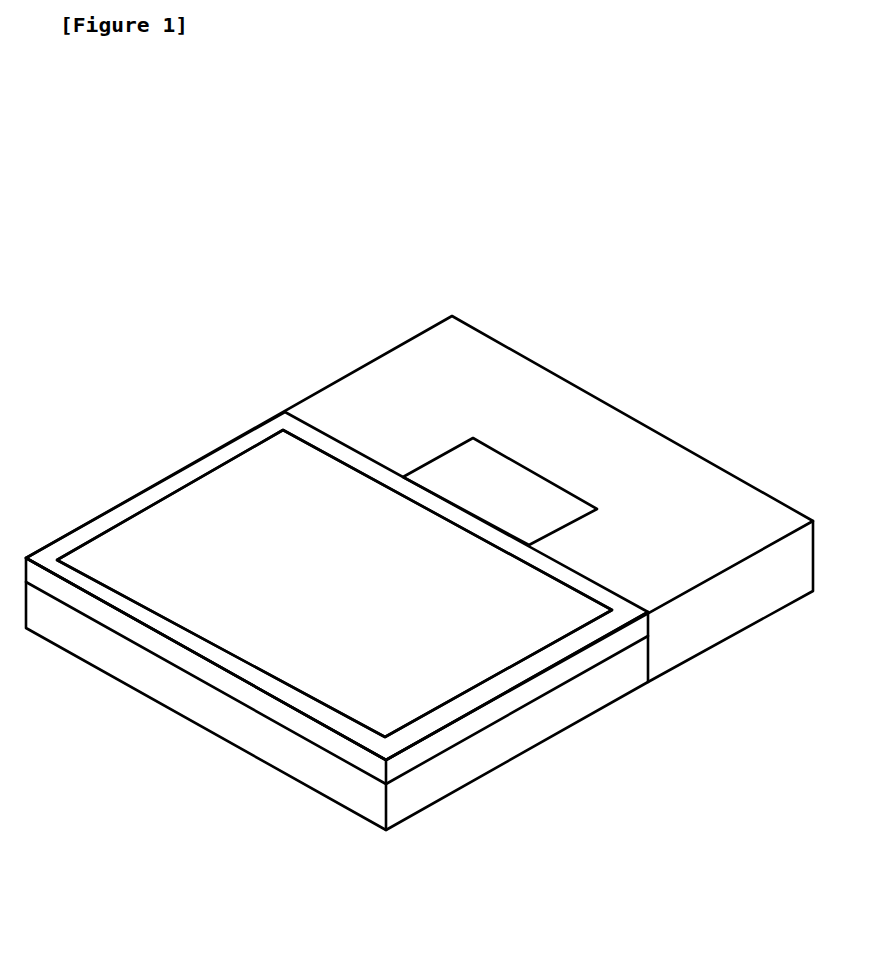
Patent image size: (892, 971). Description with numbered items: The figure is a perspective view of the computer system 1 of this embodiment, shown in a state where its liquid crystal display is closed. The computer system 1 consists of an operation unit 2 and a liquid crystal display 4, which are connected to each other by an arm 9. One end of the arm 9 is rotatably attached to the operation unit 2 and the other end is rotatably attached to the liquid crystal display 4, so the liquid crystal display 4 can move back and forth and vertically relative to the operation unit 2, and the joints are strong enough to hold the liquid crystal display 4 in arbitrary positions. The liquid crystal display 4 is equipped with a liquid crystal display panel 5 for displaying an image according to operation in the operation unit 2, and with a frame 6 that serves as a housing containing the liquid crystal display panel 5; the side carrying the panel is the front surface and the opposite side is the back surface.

The computer system 1 is at (419, 573).
The operation unit 2 is at (556, 711).
The liquid crystal display 4 is at (460, 726).
The liquid crystal display panel 5 is at (235, 550).
The frame 6 is at (80, 537).
The arm 9 is at (525, 497).